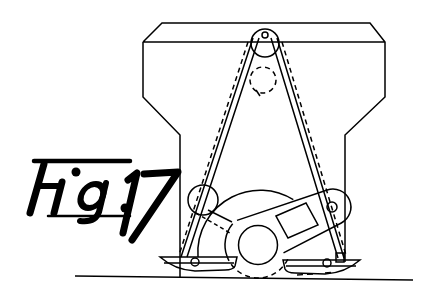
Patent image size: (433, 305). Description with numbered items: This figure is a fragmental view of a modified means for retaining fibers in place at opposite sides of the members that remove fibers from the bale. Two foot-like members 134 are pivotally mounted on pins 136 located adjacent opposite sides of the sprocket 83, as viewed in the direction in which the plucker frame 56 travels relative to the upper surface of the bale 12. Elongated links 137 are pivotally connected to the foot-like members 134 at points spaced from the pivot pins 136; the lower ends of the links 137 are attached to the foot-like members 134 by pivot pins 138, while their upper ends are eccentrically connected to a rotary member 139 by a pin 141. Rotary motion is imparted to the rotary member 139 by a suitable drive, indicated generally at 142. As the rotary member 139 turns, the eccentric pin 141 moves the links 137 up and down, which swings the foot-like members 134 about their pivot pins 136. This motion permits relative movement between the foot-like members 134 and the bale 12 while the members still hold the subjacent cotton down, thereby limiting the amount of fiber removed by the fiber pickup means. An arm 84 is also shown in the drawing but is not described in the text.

The bale 12 is at (378, 279).
The plucker frame 56 is at (386, 33).
The sprocket 83 is at (268, 254).
The arm 84 is at (304, 196).
The foot-like member 134 is at (194, 272).
The pivot pin 136 is at (228, 259).
The elongated link 137 is at (222, 162).
The pivot pin 138 is at (180, 270).
The rotary member 139 is at (277, 38).
The pin 141 is at (267, 29).
The drive 142 is at (257, 97).